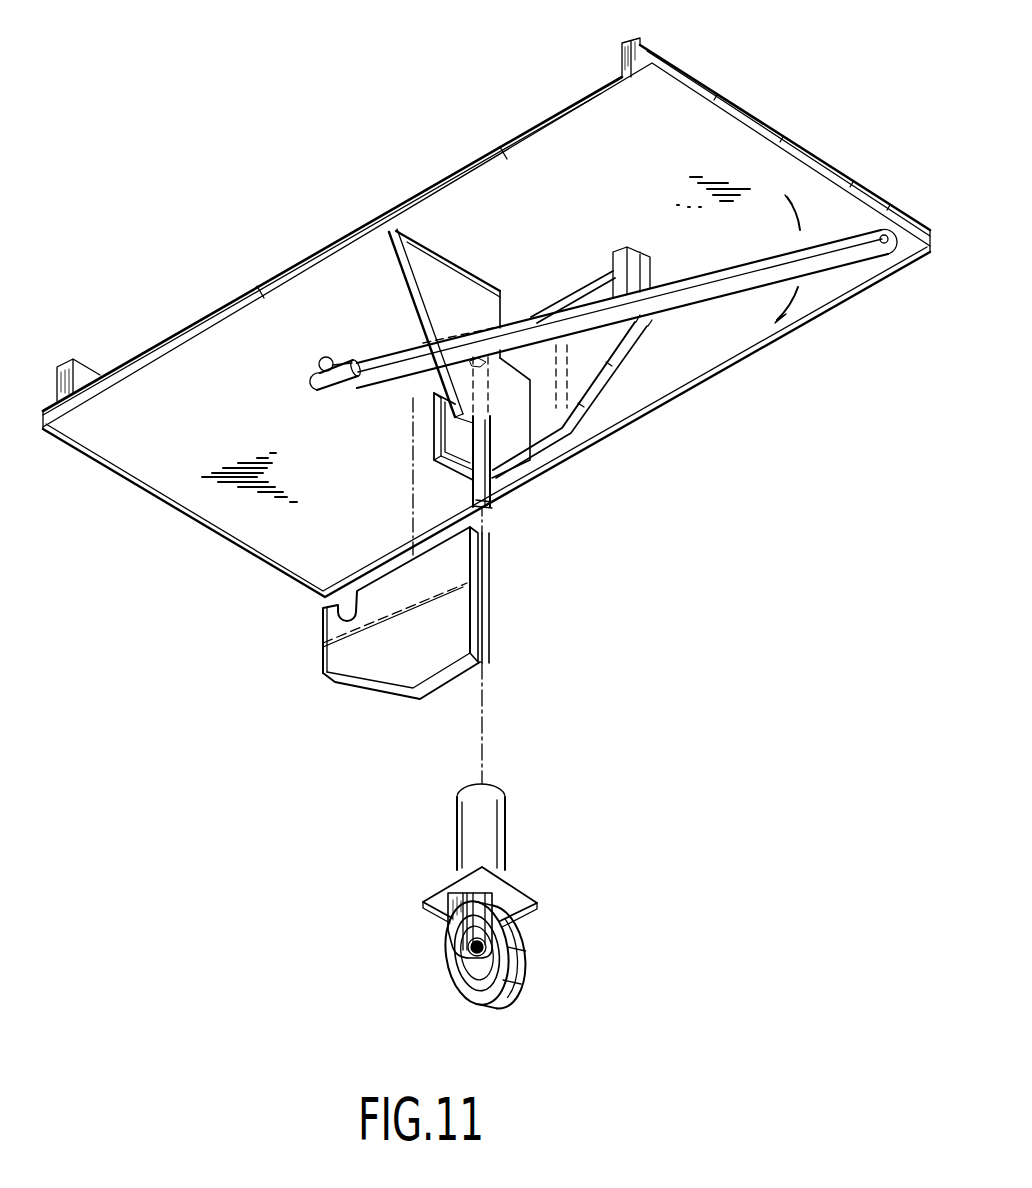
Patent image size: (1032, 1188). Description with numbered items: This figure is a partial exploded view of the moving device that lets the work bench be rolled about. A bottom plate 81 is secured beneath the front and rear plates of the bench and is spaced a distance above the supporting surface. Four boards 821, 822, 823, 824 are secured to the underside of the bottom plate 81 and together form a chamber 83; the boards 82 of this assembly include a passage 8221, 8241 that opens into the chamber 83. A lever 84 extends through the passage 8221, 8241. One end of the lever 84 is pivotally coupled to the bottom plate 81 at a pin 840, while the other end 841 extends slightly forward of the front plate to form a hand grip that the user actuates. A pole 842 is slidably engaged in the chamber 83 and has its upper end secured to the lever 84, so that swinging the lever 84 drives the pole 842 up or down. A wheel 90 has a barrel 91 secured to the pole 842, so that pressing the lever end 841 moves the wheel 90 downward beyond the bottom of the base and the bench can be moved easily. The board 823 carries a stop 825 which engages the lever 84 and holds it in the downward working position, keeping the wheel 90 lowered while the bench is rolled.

The bottom plate 81 is at (752, 153).
The bracket plate 82 is at (466, 305).
The board 821 is at (323, 642).
The board 822 is at (478, 505).
The passage 8221 is at (452, 470).
The board 823 is at (585, 378).
The board 824 is at (421, 277).
The passage 8241 is at (513, 303).
The stop 825 is at (618, 250).
The chamber 83 is at (403, 474).
The lever 84 is at (570, 320).
The pin 840 is at (322, 357).
The other end of lever 841 is at (870, 243).
The pole 842 is at (493, 500).
The wheel 90 is at (545, 928).
The barrel 91 is at (510, 808).